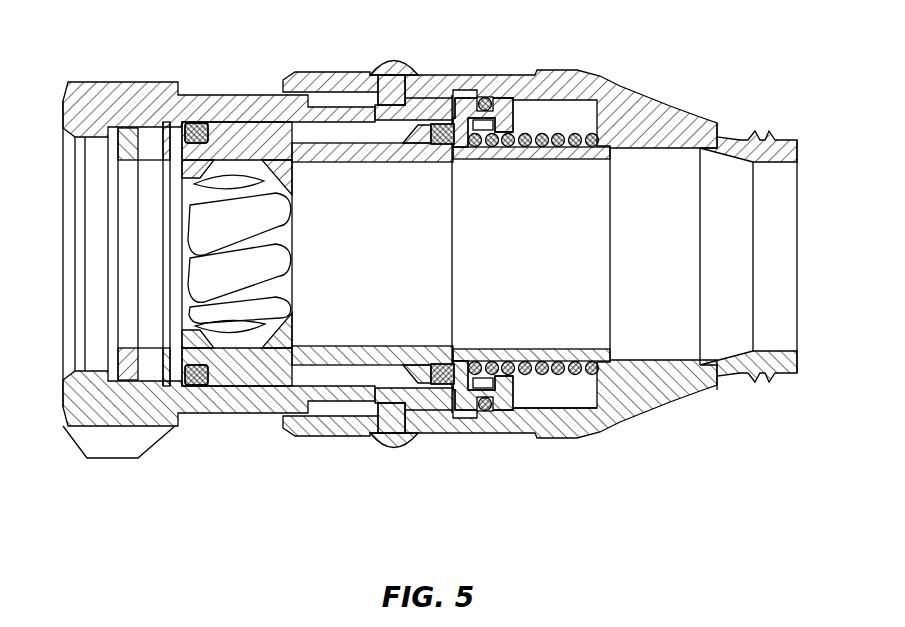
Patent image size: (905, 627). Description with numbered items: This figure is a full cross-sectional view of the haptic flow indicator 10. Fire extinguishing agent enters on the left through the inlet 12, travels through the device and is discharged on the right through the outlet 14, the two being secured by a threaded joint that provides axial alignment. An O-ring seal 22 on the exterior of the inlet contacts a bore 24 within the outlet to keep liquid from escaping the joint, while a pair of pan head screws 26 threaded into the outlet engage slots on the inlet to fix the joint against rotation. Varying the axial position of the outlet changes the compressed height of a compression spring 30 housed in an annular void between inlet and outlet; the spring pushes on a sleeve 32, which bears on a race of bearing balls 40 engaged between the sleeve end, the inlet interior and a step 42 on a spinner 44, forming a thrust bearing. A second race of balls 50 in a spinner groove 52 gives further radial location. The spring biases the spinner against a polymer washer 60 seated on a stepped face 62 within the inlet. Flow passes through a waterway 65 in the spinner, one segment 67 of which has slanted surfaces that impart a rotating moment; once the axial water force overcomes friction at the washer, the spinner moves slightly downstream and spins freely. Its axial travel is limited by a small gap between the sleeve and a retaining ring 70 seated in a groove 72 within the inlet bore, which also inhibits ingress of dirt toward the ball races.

The haptic flow indicator 10 is at (675, 79).
The inlet 12 is at (80, 106).
The outlet 14 is at (707, 118).
The O-ring seal 22 is at (482, 411).
The bore 24 is at (567, 410).
The pan head screws 26 is at (406, 67).
The compression spring 30 is at (559, 132).
The sleeve 32 is at (610, 341).
The race of bearing balls 40 is at (452, 122).
The step 42 is at (410, 138).
The spinner 44 is at (277, 372).
The second race of balls 50 is at (195, 121).
The spinner groove 52 is at (195, 387).
The polymer washer 60 is at (163, 373).
The stepped face 62 is at (167, 347).
The waterway 65 is at (322, 162).
The segment 67 is at (212, 187).
The retaining ring 70 is at (497, 100).
The groove 72 is at (484, 96).